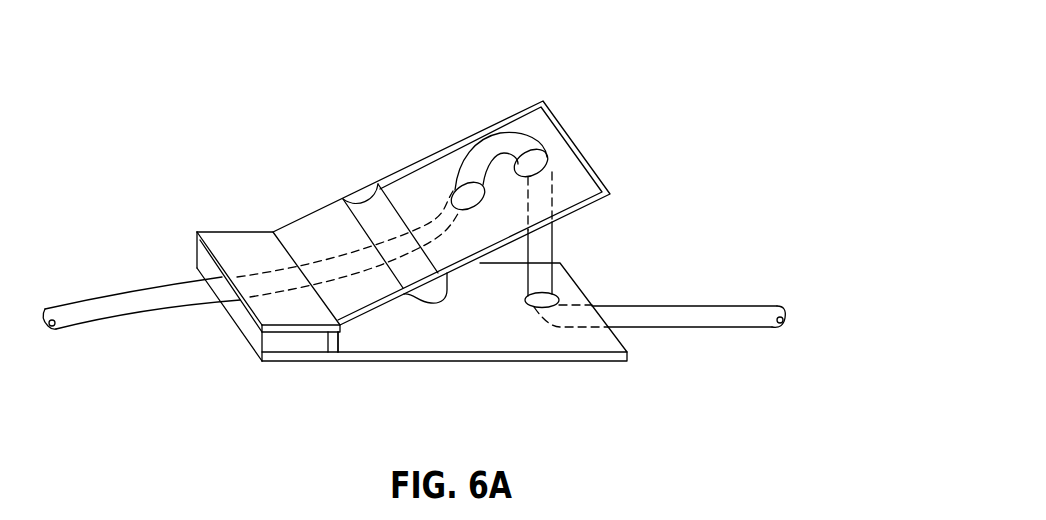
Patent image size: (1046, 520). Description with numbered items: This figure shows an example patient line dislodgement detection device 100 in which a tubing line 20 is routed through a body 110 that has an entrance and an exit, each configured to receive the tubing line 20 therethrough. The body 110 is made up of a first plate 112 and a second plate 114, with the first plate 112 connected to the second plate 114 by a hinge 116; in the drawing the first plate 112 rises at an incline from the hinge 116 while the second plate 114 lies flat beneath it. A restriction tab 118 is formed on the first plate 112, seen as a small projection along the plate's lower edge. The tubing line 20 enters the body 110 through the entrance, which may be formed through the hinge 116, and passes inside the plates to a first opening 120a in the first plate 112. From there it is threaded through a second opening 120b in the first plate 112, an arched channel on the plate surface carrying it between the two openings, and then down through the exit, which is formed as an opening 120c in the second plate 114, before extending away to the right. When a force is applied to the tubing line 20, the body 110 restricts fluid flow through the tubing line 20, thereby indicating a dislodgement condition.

The patient line dislodgement detection device 100 is at (716, 88).
The tubing line 20 is at (729, 305).
The body 110 is at (223, 232).
The first plate 112 is at (543, 101).
The second plate 114 is at (585, 362).
The hinge 116 is at (343, 343).
The restriction tab 118 is at (433, 305).
The first opening 120a is at (453, 191).
The second opening 120b is at (547, 155).
The opening 120c is at (558, 300).